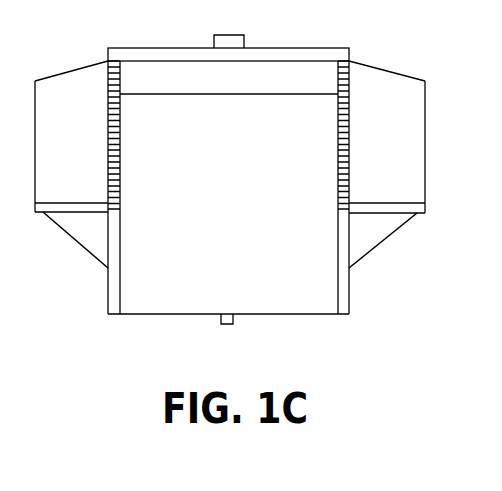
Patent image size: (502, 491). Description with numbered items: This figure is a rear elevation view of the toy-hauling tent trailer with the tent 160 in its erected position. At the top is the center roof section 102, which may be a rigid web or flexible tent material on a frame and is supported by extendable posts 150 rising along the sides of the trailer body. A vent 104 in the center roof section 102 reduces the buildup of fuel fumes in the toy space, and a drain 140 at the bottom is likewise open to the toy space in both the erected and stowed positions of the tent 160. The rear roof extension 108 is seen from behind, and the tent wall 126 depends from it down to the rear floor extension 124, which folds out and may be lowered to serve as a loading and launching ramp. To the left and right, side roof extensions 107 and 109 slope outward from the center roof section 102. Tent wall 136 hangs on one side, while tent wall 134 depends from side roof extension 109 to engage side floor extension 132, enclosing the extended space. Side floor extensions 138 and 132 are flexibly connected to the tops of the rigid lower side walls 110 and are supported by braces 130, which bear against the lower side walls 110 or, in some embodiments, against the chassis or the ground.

The center roof section 102 is at (318, 45).
The vent 104 is at (234, 35).
The side roof extension 107 is at (67, 65).
The rear roof extension 108 is at (252, 88).
The side roof extension 109 is at (380, 65).
The lower side wall 110 is at (108, 295).
The rear floor extension 124 is at (292, 317).
The tent wall 126 is at (255, 188).
The brace 130 is at (72, 243).
The side floor extension 132 is at (383, 203).
The tent wall 134 is at (427, 135).
The tent wall 136 is at (33, 115).
The side floor extension 138 is at (58, 203).
The drain 140 is at (223, 326).
The extendable post 150 is at (107, 152).
The tent 160 is at (135, 33).